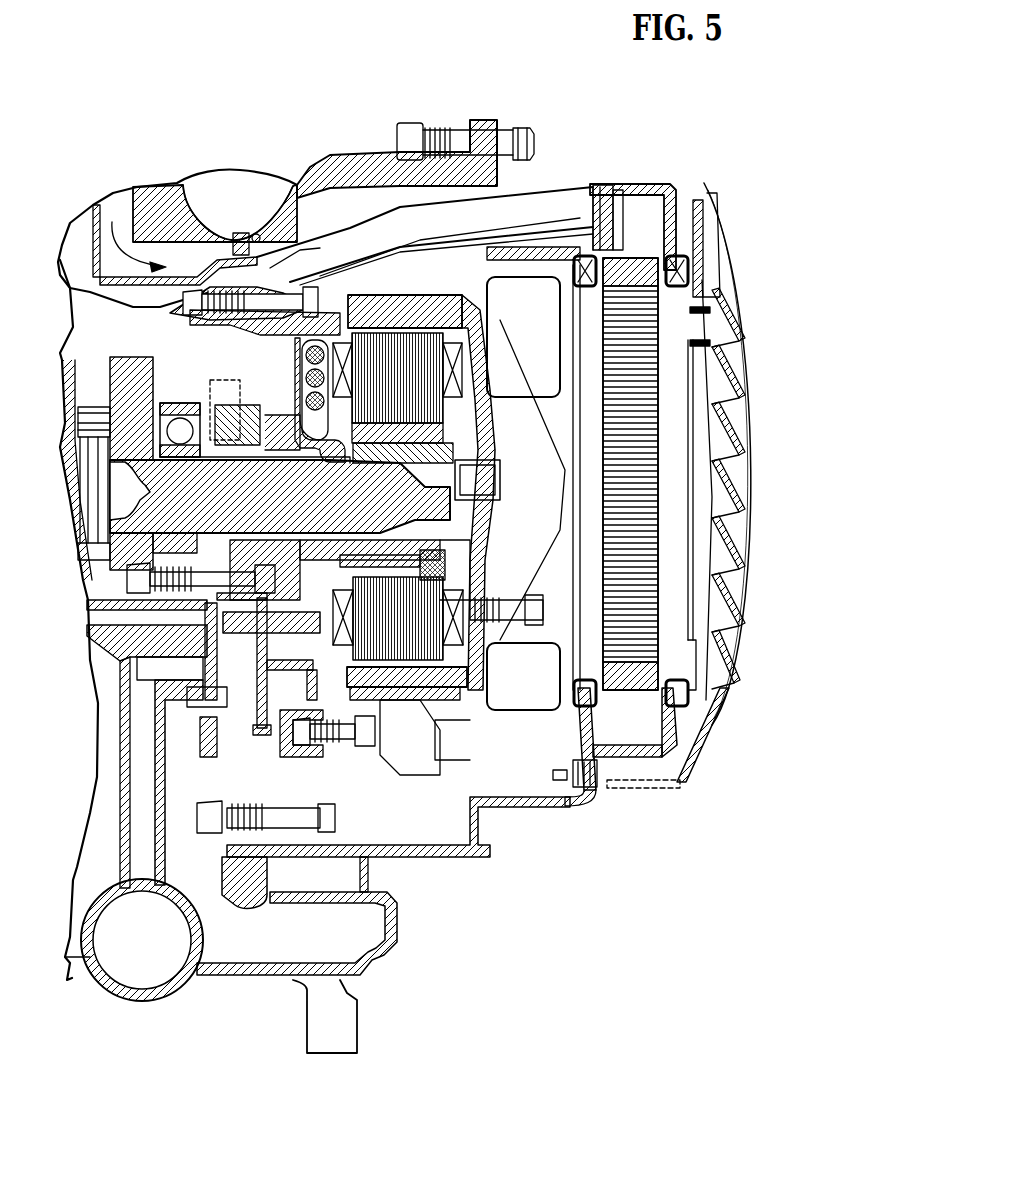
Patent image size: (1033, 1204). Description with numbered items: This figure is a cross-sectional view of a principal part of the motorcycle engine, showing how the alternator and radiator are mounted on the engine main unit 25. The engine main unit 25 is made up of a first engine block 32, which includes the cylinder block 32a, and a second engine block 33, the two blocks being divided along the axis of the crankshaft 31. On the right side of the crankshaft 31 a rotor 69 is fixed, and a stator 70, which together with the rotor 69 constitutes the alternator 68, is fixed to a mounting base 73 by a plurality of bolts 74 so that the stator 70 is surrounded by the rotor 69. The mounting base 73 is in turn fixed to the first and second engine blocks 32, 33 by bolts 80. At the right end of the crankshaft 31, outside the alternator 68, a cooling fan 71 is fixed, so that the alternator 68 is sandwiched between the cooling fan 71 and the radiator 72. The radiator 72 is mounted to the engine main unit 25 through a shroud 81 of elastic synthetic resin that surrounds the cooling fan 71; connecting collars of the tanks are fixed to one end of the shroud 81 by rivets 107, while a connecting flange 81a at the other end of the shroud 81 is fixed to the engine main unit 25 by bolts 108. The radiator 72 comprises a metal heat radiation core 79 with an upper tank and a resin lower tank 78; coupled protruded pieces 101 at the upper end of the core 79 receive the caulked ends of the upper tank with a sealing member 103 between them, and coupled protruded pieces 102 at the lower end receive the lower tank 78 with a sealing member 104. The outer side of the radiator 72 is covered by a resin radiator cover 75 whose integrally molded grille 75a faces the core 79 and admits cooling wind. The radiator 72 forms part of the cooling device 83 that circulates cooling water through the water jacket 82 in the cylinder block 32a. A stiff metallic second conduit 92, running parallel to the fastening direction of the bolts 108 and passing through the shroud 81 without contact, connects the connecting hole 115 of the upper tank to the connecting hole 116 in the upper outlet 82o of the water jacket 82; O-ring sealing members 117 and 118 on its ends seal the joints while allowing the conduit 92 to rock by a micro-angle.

The engine main unit 25 is at (160, 172).
The crankshaft 31 is at (280, 463).
The first engine block 32 is at (208, 212).
The cylinder block 32a is at (355, 162).
The second engine block 33 is at (97, 708).
The alternator 68 is at (412, 292).
The rotor 69 is at (436, 730).
The stator 70 is at (397, 398).
The cooling fan 71 is at (523, 337).
The radiator 72 is at (658, 400).
The mounting base 73 is at (411, 632).
The bolts 74 is at (398, 605).
The radiator cover 75 is at (690, 200).
The grille 75a is at (687, 490).
The lower tank 78 is at (690, 782).
The heat radiation core 79 is at (630, 474).
The bolts 80 is at (331, 818).
The shroud 81 is at (497, 808).
The connecting flange 81a is at (490, 120).
The water jacket 82 is at (125, 205).
The upper outlet 82o is at (206, 214).
The cooling device 83 is at (624, 178).
The second conduit 92 is at (525, 198).
The coupled protruded pieces 101 is at (700, 212).
The coupled protruded pieces 102 is at (576, 690).
The sealing member 103 is at (680, 268).
The sealing member 104 is at (575, 713).
The rivets 107 is at (580, 790).
The bolts 108 is at (528, 148).
The connecting hole 115 is at (632, 207).
The connecting hole 116 is at (222, 240).
The sealing member 117 is at (593, 205).
The sealing member 118 is at (296, 250).